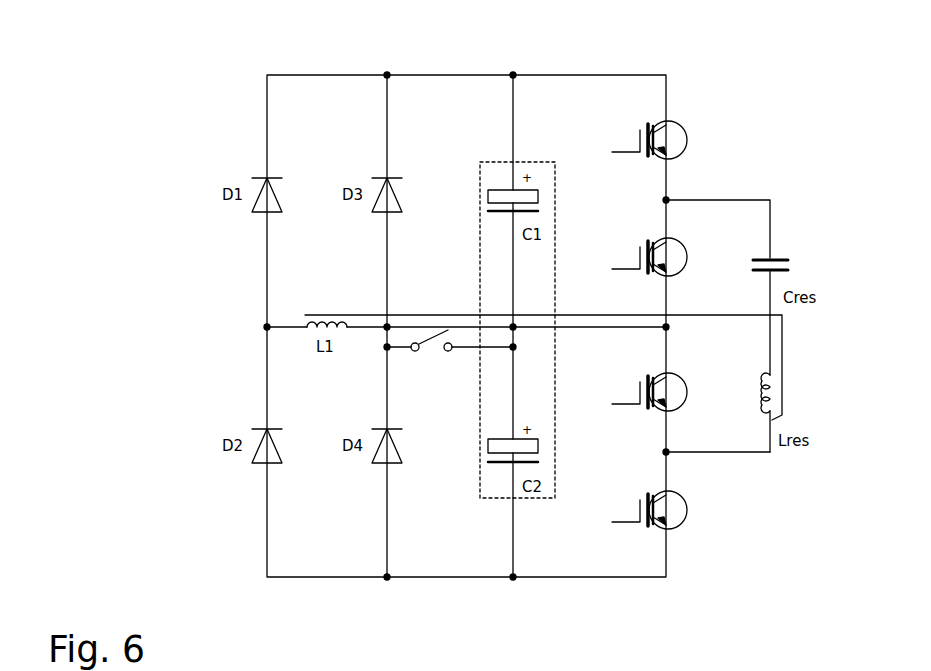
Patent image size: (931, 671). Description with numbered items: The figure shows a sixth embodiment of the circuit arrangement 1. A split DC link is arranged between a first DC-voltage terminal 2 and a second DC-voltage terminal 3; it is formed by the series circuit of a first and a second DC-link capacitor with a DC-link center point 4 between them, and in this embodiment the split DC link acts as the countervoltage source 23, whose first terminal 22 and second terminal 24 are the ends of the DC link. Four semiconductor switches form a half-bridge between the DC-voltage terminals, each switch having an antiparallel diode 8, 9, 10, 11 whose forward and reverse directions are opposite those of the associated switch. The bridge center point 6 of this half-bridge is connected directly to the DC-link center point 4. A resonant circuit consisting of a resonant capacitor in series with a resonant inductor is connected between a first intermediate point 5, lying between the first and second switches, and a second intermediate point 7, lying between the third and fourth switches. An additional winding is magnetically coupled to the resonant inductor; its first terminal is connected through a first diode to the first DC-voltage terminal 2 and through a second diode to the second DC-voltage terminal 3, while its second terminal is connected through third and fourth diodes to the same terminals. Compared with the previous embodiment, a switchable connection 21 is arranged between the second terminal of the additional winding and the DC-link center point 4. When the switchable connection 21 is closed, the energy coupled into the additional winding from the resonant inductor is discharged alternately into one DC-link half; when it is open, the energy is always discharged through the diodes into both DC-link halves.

The circuit arrangement 1 is at (478, 20).
The first DC-voltage terminal 2 is at (513, 72).
The second DC-voltage terminal 3 is at (515, 582).
The DC-link center point 4 is at (520, 333).
The first intermediate point 5 is at (660, 200).
The bridge center point 6 is at (658, 330).
The second intermediate point 7 is at (660, 452).
The antiparallel diode 8 is at (692, 141).
The antiparallel diode 9 is at (692, 258).
The antiparallel diode 10 is at (692, 393).
The antiparallel diode 11 is at (692, 511).
The switchable connection 21 is at (438, 355).
The first terminal of the countervoltage source 22 is at (507, 140).
The countervoltage source 23 is at (475, 275).
The second terminal of the countervoltage source 24 is at (507, 524).